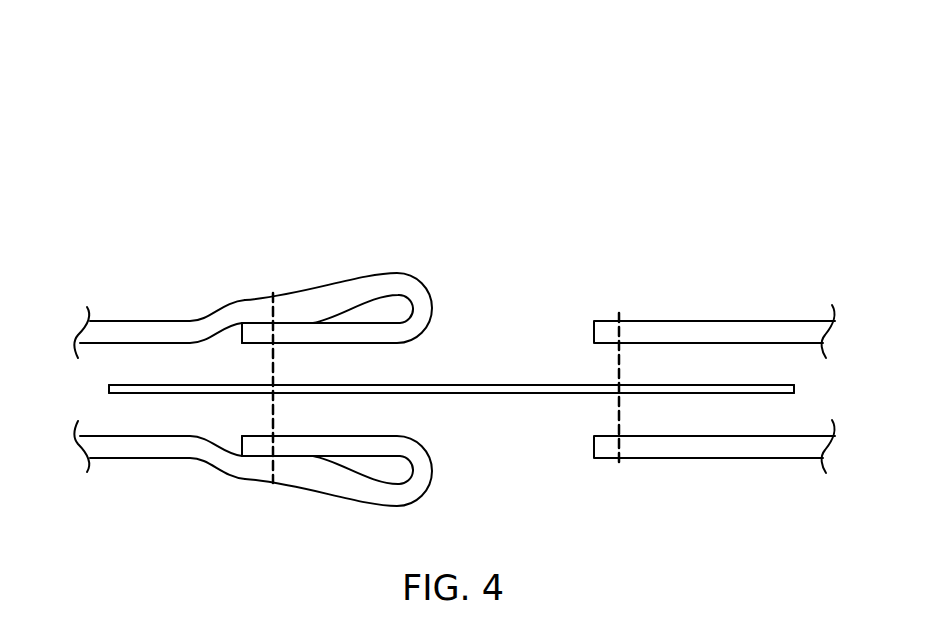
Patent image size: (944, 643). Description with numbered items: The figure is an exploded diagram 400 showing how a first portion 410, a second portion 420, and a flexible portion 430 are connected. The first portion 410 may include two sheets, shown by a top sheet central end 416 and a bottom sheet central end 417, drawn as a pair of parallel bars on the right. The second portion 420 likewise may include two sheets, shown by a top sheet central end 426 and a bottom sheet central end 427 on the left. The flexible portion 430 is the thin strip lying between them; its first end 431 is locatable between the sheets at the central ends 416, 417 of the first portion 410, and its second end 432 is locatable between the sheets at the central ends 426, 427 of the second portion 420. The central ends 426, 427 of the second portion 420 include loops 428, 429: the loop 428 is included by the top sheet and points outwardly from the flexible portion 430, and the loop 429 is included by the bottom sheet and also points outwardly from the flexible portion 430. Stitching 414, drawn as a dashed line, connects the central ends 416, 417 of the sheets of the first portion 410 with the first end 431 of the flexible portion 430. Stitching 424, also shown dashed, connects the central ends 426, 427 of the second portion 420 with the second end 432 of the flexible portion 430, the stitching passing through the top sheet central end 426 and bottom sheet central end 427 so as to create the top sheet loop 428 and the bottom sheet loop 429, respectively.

The exploded diagram 400 is at (453, 283).
The first portion 410 is at (719, 347).
The stitching 414 is at (620, 368).
The top sheet central end 416 is at (605, 321).
The bottom sheet central end 417 is at (604, 458).
The second portion 420 is at (246, 372).
The stitching 424 is at (272, 372).
The top sheet central end 426 is at (176, 321).
The bottom sheet central end 427 is at (131, 457).
The loop 428 is at (404, 273).
The loop 429 is at (393, 507).
The flexible portion 430 is at (505, 394).
The first end 431 is at (796, 390).
The second end 432 is at (108, 389).